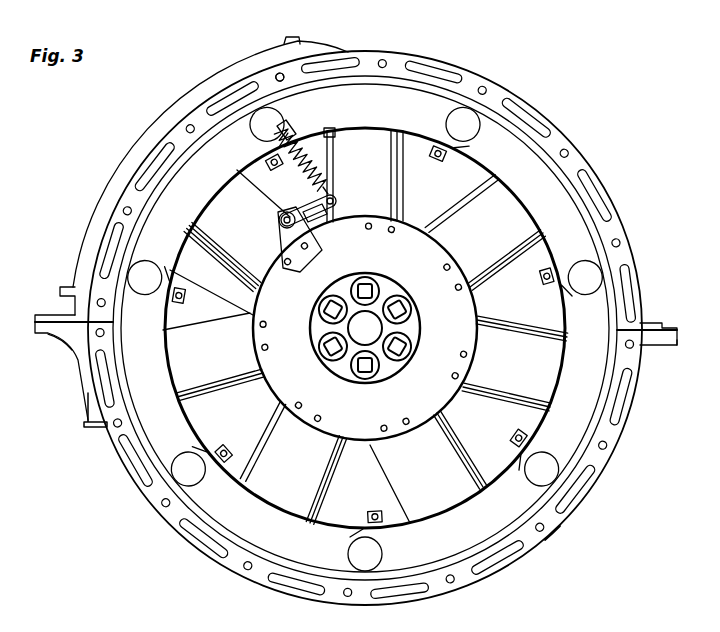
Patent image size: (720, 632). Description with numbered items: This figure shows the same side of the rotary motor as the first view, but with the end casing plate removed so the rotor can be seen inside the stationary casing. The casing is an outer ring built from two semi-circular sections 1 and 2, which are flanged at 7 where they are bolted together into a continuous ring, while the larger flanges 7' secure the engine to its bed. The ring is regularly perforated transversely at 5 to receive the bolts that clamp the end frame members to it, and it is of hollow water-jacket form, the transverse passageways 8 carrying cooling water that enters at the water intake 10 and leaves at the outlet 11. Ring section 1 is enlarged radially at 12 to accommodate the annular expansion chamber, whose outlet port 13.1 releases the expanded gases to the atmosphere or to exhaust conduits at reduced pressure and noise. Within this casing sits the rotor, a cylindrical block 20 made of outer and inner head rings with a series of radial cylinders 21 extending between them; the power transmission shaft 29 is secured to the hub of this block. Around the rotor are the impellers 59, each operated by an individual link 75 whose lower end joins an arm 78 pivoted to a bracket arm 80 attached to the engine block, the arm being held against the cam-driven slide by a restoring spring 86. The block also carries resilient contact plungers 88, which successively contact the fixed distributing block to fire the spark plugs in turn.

The semi-circular ring section 1 is at (490, 78).
The semi-circular ring section 2 is at (560, 526).
The transverse perforations 5 is at (565, 145).
The flanges 7 is at (346, 354).
The larger flanges 7' is at (348, 350).
The transverse passageways 8 is at (594, 199).
The water intake 10 is at (286, 38).
The water outlet 11 is at (70, 288).
The radial enlargement of ring section 12 is at (192, 89).
The outlet port of expansion chamber 13.1 is at (93, 428).
The cylindrical block 20 is at (365, 311).
The radial cylinders 21 is at (452, 210).
The power transmission shaft 29 is at (370, 322).
The impeller 59 is at (282, 110).
The link 75 is at (326, 186).
The arm 78 is at (306, 201).
The bracket arm 80 is at (292, 233).
The restoring spring 86 is at (330, 130).
The resilient contact plungers 88 is at (262, 160).